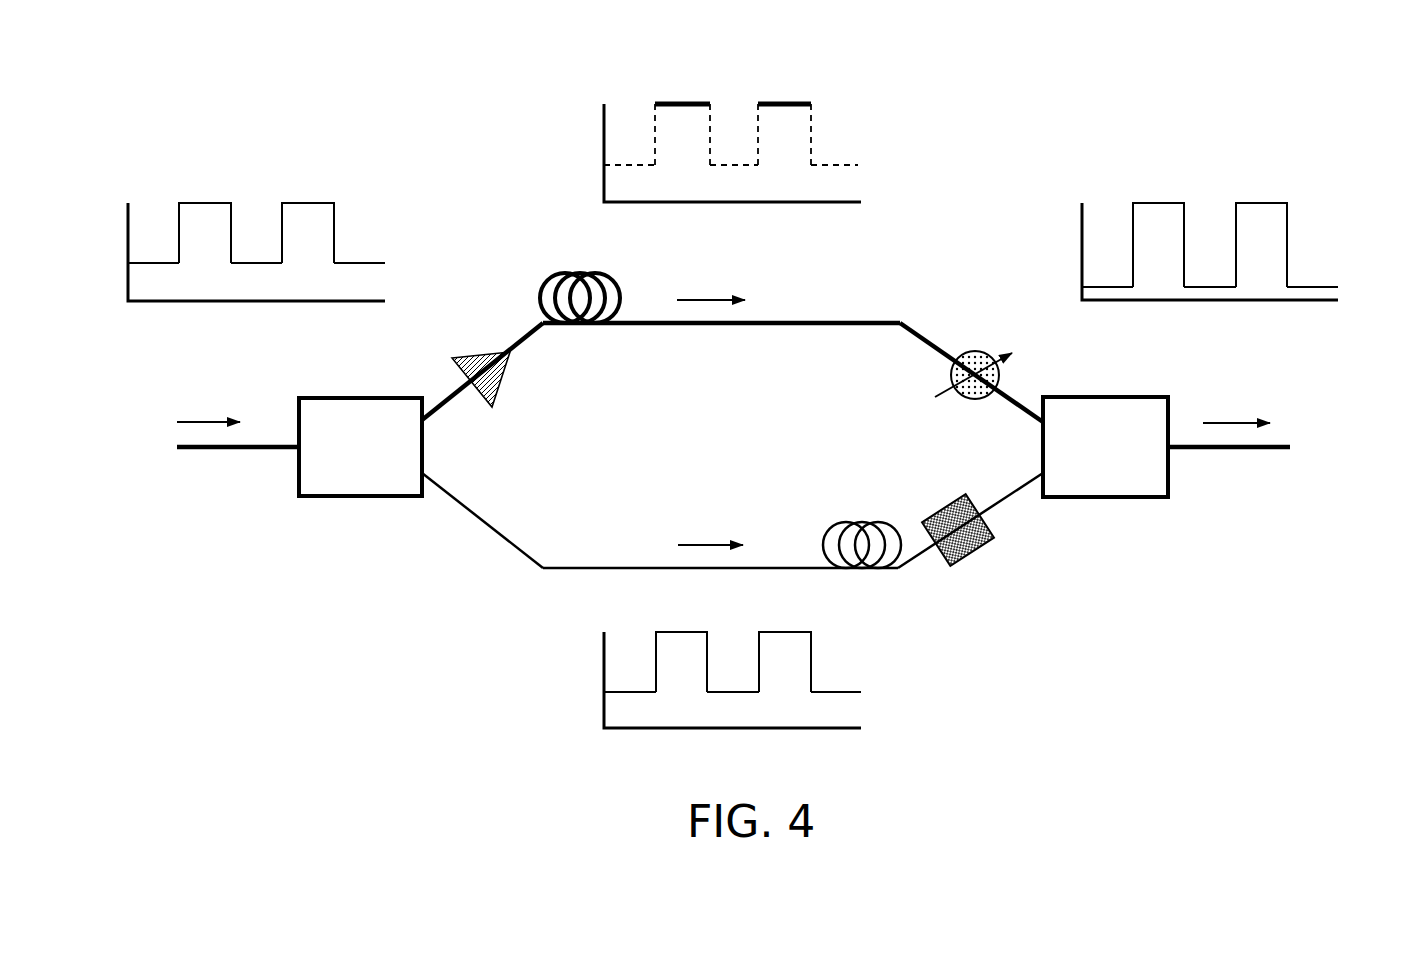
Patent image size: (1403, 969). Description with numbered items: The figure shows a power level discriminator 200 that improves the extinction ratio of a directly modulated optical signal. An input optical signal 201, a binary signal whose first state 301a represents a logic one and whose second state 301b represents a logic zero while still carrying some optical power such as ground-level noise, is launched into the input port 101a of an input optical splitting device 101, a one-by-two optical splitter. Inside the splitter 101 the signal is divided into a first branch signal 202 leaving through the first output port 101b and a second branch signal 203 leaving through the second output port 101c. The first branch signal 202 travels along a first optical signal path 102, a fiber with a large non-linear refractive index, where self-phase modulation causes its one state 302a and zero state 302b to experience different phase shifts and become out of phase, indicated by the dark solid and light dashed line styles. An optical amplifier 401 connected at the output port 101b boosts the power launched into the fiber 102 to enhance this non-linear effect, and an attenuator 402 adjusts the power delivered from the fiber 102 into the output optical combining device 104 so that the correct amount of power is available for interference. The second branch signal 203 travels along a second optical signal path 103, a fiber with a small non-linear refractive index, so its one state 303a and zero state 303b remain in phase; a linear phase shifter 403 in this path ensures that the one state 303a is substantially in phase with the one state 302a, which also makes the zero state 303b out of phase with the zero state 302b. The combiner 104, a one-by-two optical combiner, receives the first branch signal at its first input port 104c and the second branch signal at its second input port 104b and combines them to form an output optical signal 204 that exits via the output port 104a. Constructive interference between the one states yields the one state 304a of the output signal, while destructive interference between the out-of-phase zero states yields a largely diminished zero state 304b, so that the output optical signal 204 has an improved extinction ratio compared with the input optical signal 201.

The power level discriminator 200 is at (500, 638).
The input optical splitting device 101 is at (356, 490).
The input port 101a is at (273, 448).
The first output port 101b is at (443, 395).
The second output port 101c is at (440, 483).
The first optical signal path 102 is at (925, 332).
The second optical signal path 103 is at (540, 550).
The output optical combining device 104 is at (1113, 490).
The output port 104a is at (1192, 448).
The second input port 104b is at (1027, 483).
The first input port 104c is at (1013, 393).
The input optical signal 201 is at (197, 301).
The first branch signal 202 is at (692, 202).
The second branch signal 203 is at (703, 545).
The output optical signal 204 is at (1217, 300).
The first state of input signal 301a is at (311, 203).
The second state of input signal 301b is at (360, 263).
The one state of first branch signal 302a is at (788, 104).
The zero state of first branch signal 302b is at (836, 165).
The one state of second branch signal 303a is at (788, 632).
The zero state of second branch signal 303b is at (837, 692).
The one state of output signal 304a is at (1253, 203).
The zero state of output signal 304b is at (1302, 287).
The optical amplifier 401 is at (497, 350).
The attenuator 402 is at (982, 351).
The linear phase shifter 403 is at (968, 560).